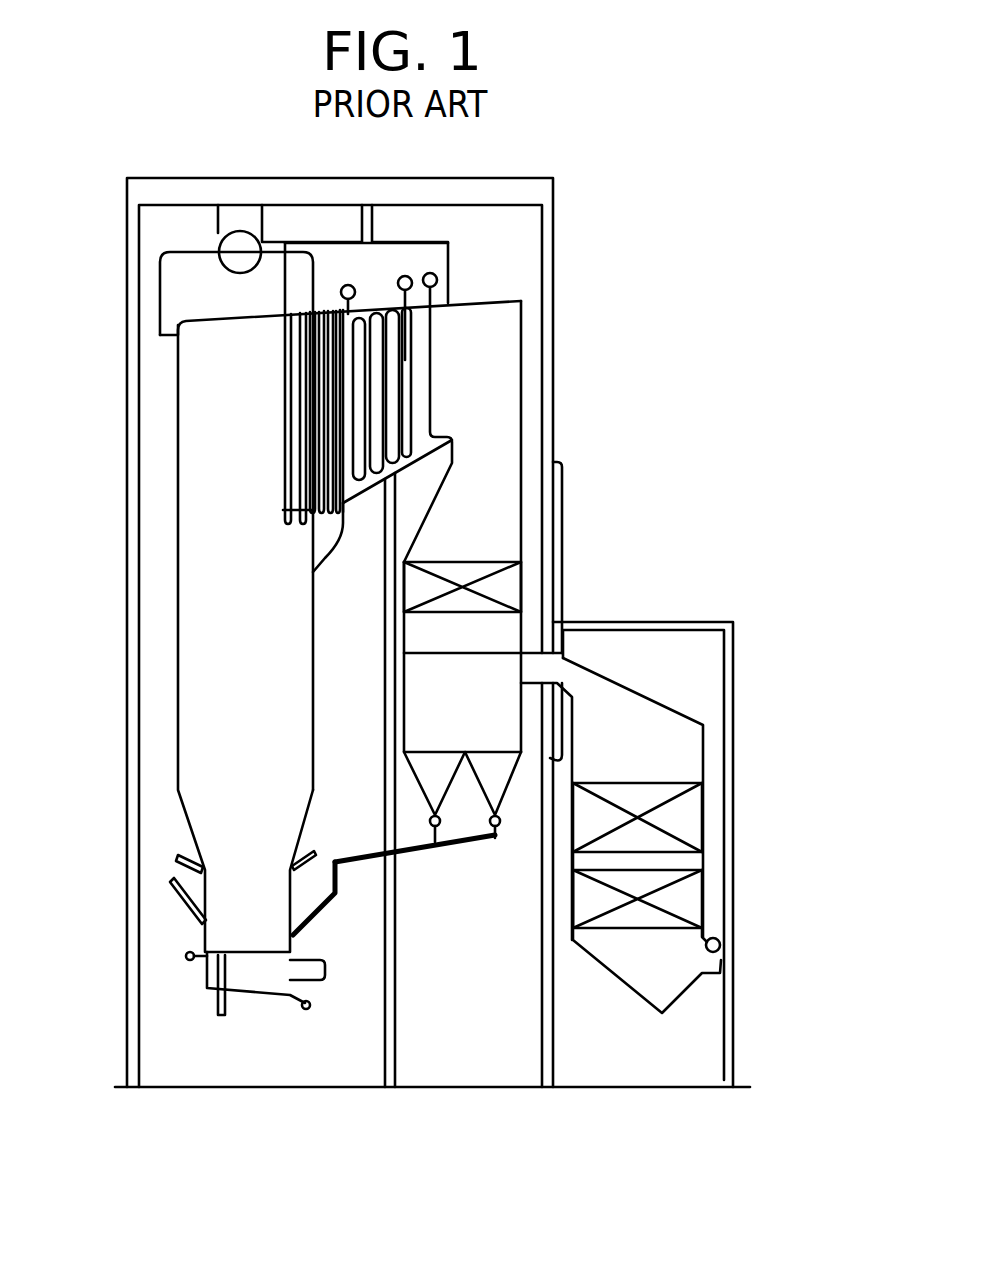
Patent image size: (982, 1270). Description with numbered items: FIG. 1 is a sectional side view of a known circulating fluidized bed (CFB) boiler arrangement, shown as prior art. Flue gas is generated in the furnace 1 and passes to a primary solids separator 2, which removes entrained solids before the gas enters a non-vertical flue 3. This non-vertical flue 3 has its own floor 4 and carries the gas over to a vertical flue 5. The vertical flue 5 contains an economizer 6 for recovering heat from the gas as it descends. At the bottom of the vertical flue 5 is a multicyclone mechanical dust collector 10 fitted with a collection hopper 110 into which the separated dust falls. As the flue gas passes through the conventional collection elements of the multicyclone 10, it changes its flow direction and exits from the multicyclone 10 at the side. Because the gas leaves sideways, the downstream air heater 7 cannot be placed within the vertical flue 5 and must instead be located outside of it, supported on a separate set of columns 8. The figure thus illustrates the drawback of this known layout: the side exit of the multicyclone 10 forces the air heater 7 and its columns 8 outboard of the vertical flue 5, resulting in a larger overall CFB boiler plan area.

The furnace 1 is at (200, 618).
The primary solids separator 2 is at (293, 395).
The non-vertical flue 3 is at (387, 362).
The floor 4 is at (420, 462).
The vertical flue 5 is at (562, 583).
The economizer 6 is at (410, 585).
The air heater 7 is at (688, 817).
The separate set of columns 8 is at (735, 665).
The multicyclone mechanical dust collector 10 is at (433, 693).
The collection hopper 110 is at (500, 778).